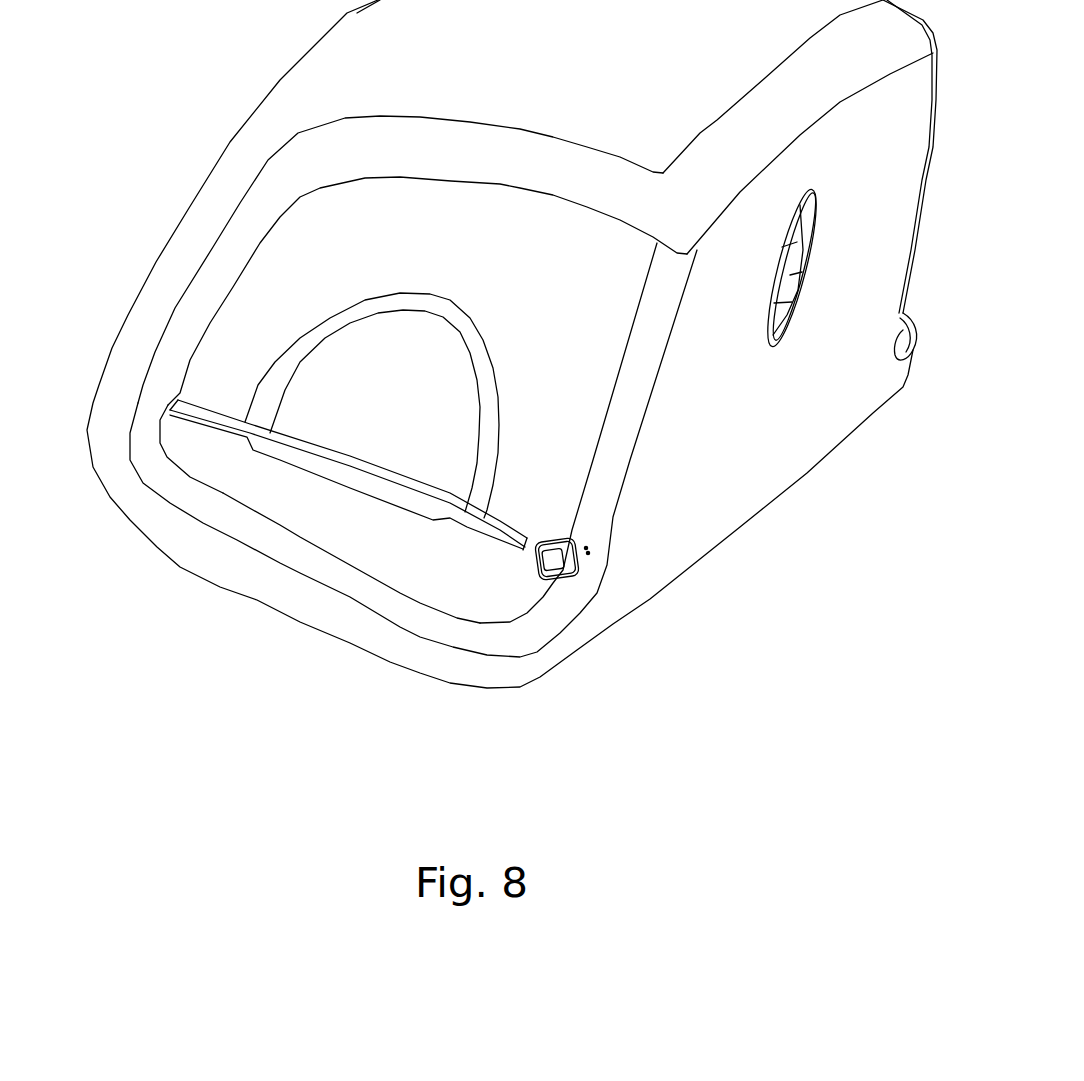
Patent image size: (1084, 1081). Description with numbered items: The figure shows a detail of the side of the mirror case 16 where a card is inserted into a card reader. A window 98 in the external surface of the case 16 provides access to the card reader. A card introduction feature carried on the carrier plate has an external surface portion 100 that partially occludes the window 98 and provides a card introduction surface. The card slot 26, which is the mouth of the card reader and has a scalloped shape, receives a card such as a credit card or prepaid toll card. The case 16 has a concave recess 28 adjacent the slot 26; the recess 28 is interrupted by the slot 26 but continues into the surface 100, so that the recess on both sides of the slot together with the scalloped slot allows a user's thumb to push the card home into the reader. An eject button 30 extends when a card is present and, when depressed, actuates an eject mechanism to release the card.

The case 16 is at (129, 314).
The card slot 26 is at (318, 450).
The concave recess 28 is at (363, 362).
The eject button 30 is at (557, 563).
The window 98 is at (503, 520).
The external surface portion 100 is at (430, 560).